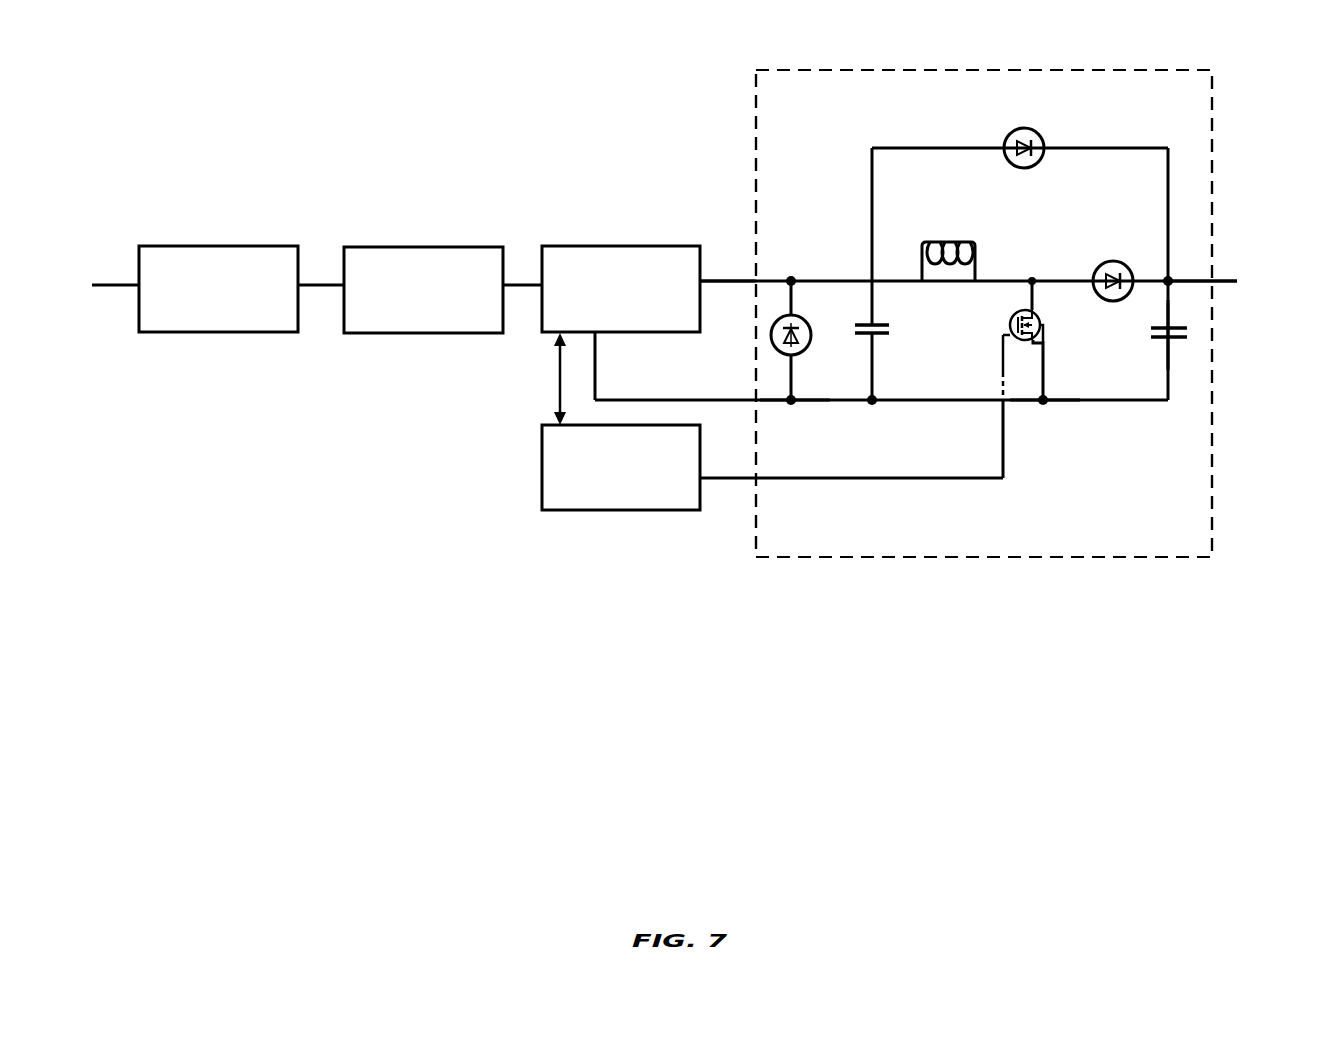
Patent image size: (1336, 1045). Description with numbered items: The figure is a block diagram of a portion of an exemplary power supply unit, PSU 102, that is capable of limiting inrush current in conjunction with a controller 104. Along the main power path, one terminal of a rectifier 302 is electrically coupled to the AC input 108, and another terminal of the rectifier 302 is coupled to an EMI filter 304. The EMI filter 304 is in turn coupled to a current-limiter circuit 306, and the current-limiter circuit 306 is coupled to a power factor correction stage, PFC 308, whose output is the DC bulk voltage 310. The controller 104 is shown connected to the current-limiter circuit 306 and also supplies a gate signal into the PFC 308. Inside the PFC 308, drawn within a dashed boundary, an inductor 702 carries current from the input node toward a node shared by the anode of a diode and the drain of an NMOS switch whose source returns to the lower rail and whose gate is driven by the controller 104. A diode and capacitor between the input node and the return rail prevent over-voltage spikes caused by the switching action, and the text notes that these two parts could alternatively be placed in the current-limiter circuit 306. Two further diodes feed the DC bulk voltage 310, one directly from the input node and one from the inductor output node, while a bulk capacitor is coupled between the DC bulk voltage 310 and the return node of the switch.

The PSU 102 is at (118, 122).
The AC input 108 is at (77, 296).
The rectifier 302 is at (218, 289).
The EMI filter 304 is at (423, 290).
The current-limiter circuit 306 is at (621, 289).
The controller 104 is at (772, 421).
The PFC 308 is at (756, 125).
The inductor 702 is at (938, 243).
The DC bulk voltage 310 is at (1245, 296).